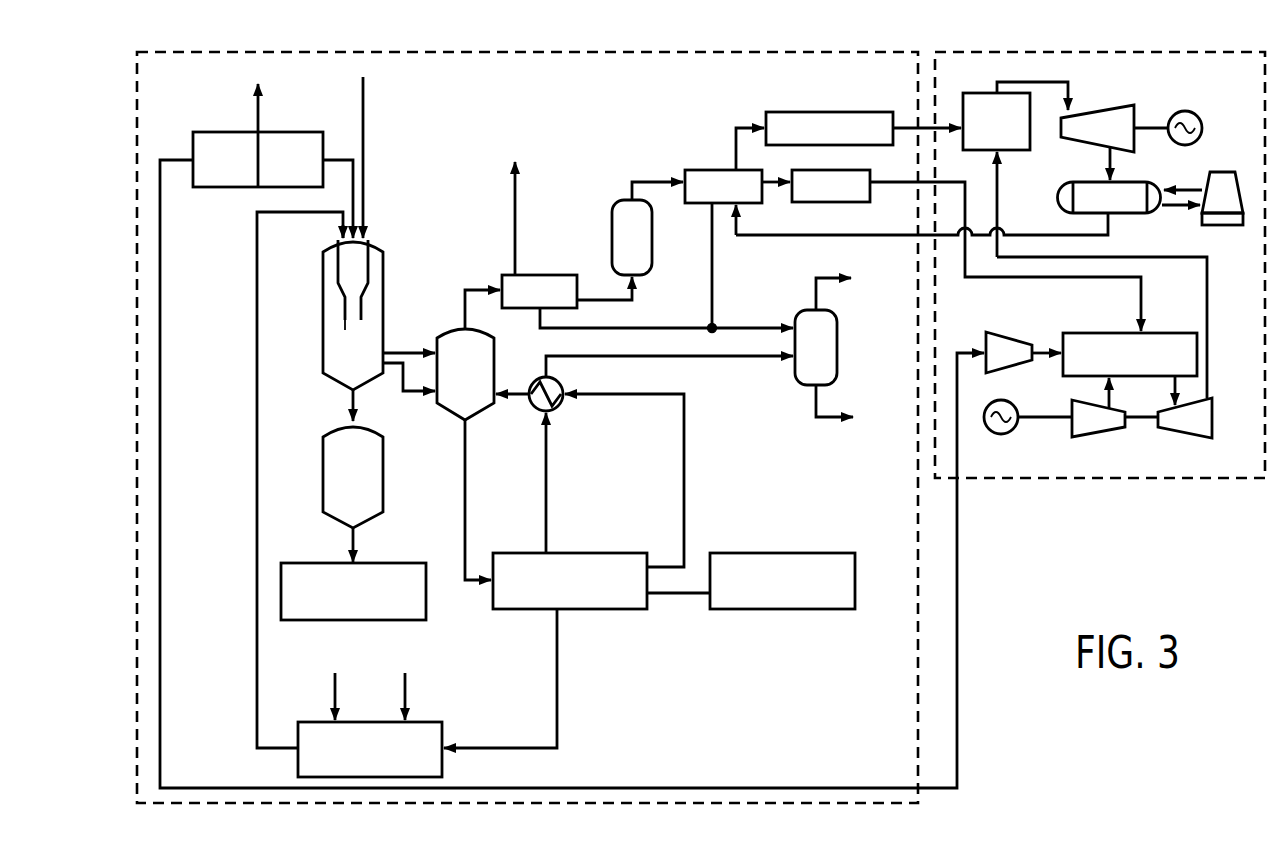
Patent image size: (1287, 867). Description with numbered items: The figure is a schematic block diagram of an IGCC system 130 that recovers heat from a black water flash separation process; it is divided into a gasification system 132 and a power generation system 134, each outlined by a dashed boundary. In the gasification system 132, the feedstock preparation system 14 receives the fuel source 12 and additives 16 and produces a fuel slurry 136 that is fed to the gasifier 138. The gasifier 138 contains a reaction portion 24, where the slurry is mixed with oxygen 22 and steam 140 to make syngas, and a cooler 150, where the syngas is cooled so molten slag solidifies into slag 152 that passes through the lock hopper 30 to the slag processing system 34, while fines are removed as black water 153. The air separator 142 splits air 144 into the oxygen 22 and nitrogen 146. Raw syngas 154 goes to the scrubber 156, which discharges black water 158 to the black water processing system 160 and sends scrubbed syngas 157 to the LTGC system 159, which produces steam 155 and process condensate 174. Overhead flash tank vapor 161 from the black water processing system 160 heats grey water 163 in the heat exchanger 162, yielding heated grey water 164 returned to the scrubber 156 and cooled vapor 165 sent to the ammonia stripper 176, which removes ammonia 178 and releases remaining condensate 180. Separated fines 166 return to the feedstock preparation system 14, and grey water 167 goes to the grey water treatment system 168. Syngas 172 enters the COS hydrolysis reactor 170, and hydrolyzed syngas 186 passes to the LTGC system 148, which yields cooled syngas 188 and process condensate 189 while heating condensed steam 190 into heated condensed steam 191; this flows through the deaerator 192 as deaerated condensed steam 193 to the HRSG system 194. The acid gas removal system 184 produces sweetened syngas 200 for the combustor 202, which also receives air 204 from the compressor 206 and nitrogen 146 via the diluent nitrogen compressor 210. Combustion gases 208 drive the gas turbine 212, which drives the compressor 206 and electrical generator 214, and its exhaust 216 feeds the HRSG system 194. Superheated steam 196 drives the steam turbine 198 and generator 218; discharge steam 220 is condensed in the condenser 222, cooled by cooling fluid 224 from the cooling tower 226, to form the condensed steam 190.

The fuel source 12 is at (336, 690).
The feedstock preparation system 14 is at (428, 722).
The additives 16 is at (406, 690).
The oxygen 22 is at (340, 158).
The reaction portion 24 is at (334, 296).
The lock hopper 30 is at (378, 428).
The slag processing system 34 is at (412, 563).
The IGCC system 130 is at (1042, 508).
The gasification system 132 is at (918, 800).
The power generation system 134 is at (1222, 478).
The fuel slurry 136 is at (257, 478).
The gasifier 138 is at (378, 244).
The steam 140 is at (365, 176).
The air separator 142 is at (285, 132).
The air 144 is at (258, 110).
The nitrogen 146 is at (160, 290).
The LTGC system 148 is at (717, 168).
The cooler 150 is at (344, 347).
The slag 152 is at (352, 398).
The black water 153 is at (400, 372).
The raw syngas 154 is at (407, 352).
The steam 155 is at (512, 225).
The scrubber 156 is at (510, 328).
The scrubbed syngas 157 is at (473, 288).
The black water 158 is at (467, 468).
The LTGC system 159 is at (530, 274).
The black water processing system 160 is at (602, 553).
The overhead flash tank vapor 161 is at (546, 477).
The heat exchanger 162 is at (563, 378).
The grey water 163 is at (687, 441).
The heated grey water 164 is at (515, 397).
The cooled vapor 165 is at (698, 357).
The separated fines 166 is at (557, 678).
The grey water 167 is at (672, 595).
The grey water treatment system 168 is at (782, 553).
The COS hydrolysis reactor 170 is at (612, 217).
The syngas 172 is at (597, 298).
The process condensate 174 is at (664, 327).
The ammonia stripper 176 is at (838, 344).
The ammonia 178 is at (830, 277).
The remaining condensate 180 is at (820, 420).
The acid gas removal system 184 is at (850, 170).
The hydrolyzed syngas 186 is at (648, 178).
The cooled syngas 188 is at (770, 185).
The process condensate 189 is at (712, 292).
The condensed steam 190 is at (827, 235).
The heated condensed steam 191 is at (735, 146).
The deaerator 192 is at (830, 111).
The deaerated condensed steam 193 is at (902, 124).
The HRSG system 194 is at (962, 94).
The superheated steam 196 is at (1042, 81).
The steam turbine 198 is at (1117, 103).
The sweetened syngas 200 is at (965, 203).
The combustor 202 is at (1102, 333).
The air 204 is at (1110, 396).
The compressor 206 is at (1077, 438).
The combustion gases 208 is at (1175, 383).
The diluent nitrogen compressor 210 is at (1007, 336).
The gas turbine 212 is at (1197, 438).
The electrical generator 214 is at (1000, 403).
The exhaust 216 is at (1207, 287).
The generator 218 is at (1192, 112).
The discharge steam 220 is at (1115, 163).
The condenser 222 is at (1088, 182).
The cooling fluid 224 is at (1182, 197).
The cooling tower 226 is at (1223, 172).